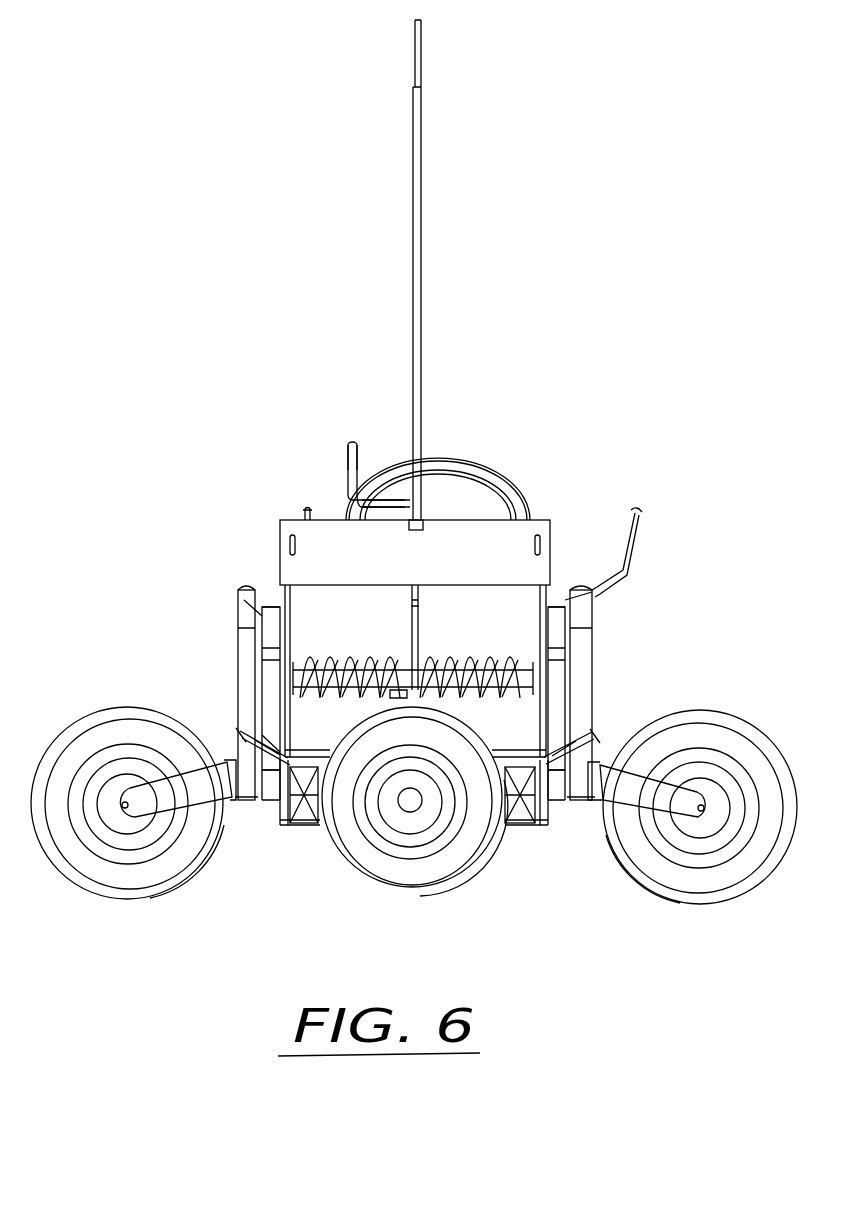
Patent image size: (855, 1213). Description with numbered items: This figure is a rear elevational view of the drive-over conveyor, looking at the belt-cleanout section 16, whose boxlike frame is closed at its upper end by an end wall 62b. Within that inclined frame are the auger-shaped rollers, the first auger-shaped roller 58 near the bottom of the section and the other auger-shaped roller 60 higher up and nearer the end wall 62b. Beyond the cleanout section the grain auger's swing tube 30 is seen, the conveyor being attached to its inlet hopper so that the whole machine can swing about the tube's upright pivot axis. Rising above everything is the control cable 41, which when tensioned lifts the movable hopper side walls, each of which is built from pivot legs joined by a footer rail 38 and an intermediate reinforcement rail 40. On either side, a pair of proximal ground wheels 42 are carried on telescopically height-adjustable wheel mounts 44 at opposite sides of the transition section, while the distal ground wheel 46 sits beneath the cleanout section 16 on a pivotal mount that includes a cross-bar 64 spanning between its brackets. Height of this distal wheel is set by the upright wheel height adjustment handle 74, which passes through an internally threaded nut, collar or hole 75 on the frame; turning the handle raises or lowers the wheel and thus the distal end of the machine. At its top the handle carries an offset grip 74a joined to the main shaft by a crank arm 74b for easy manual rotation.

The belt-cleanout section 16 is at (527, 577).
The swing tube 30 is at (467, 495).
The footer rail 38 is at (243, 728).
The intermediate reinforcement rail 40 is at (270, 792).
The control cable 41 is at (423, 56).
The proximal ground wheels 42 is at (120, 888).
The telescopically height-adjustable wheel mounts 44 is at (226, 601).
The distal ground wheel 46 is at (373, 877).
The first auger-shaped roller 58 is at (303, 822).
The auger-shaped roller 60 is at (345, 668).
The end wall 62b is at (512, 527).
The cross-bar 64 is at (521, 824).
The wheel height adjustment handle 74 is at (337, 480).
The offset grip 74a is at (353, 456).
The crank arm 74b is at (385, 498).
The internally threaded nut, collar or hole 75 is at (422, 530).